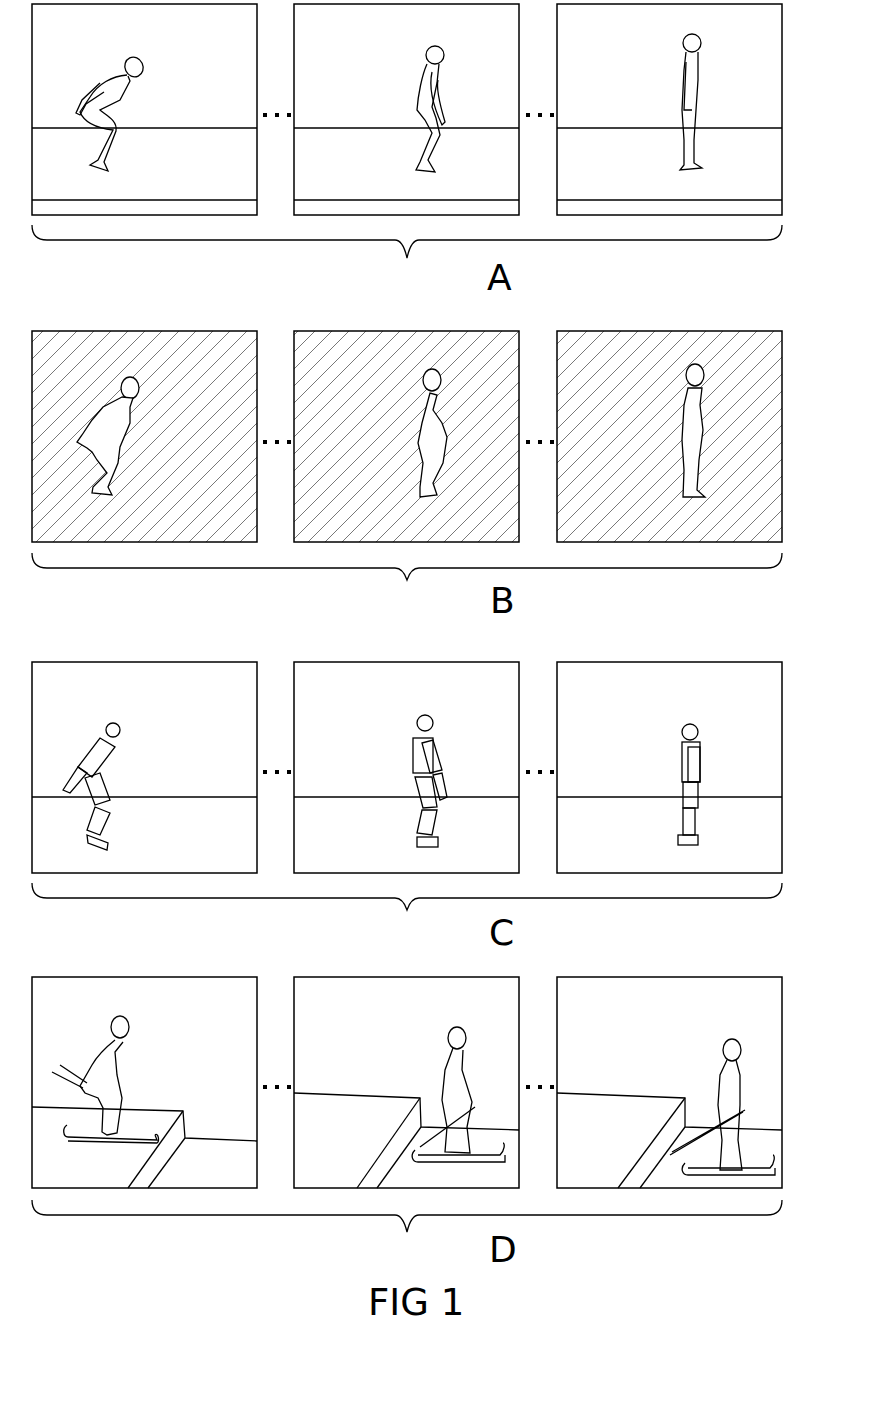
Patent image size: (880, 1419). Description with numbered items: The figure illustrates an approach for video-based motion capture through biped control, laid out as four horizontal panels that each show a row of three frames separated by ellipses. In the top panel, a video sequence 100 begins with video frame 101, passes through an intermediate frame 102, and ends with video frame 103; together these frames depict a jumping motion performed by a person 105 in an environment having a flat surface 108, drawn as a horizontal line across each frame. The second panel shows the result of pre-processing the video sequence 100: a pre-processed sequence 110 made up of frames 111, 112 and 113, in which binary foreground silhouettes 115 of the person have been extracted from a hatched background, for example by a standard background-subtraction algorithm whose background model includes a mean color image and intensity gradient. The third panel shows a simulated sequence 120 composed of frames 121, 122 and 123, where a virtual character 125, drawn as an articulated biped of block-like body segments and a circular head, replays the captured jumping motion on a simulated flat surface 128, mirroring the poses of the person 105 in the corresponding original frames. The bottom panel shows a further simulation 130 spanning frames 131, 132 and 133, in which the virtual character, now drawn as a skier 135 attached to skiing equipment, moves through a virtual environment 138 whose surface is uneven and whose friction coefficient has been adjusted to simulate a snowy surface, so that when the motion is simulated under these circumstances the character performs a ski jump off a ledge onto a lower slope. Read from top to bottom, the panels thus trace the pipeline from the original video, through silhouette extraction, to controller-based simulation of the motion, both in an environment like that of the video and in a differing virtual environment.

The video sequence 100 is at (407, 255).
The video frame 101 is at (248, 33).
The intermediate frame of sequence A 102 is at (511, 33).
The video frame 103 is at (773, 33).
The person 105 is at (123, 58).
The flat surface 108 is at (187, 138).
The second video sequence (B) with hatched background 110 is at (407, 582).
The first frame of sequence B 111 is at (248, 361).
The intermediate frame of sequence B 112 is at (511, 361).
The last frame of sequence B 113 is at (773, 361).
The binary foreground silhouettes 115 is at (137, 390).
The third video sequence (C) 120 is at (407, 912).
The first frame of sequence C 121 is at (248, 692).
The intermediate frame of sequence C 122 is at (511, 692).
The last frame of sequence C 123 is at (773, 692).
The virtual character 125 is at (121, 726).
The horizon line in frame 121 128 is at (173, 803).
The fourth video sequence (D) 130 is at (407, 1229).
The first frame of sequence D 131 is at (248, 1007).
The intermediate frame of sequence D 132 is at (511, 1007).
The last frame of sequence D 133 is at (773, 1007).
The skier in frame 131 135 is at (111, 1019).
The virtual environment 138 is at (182, 1128).